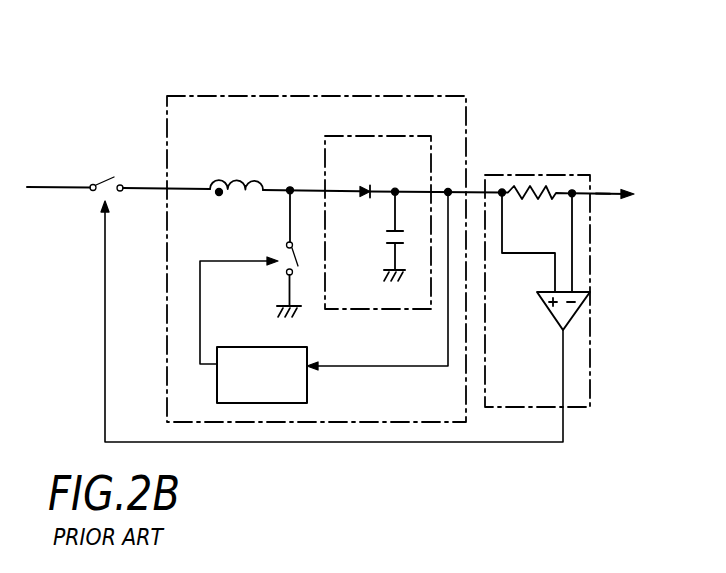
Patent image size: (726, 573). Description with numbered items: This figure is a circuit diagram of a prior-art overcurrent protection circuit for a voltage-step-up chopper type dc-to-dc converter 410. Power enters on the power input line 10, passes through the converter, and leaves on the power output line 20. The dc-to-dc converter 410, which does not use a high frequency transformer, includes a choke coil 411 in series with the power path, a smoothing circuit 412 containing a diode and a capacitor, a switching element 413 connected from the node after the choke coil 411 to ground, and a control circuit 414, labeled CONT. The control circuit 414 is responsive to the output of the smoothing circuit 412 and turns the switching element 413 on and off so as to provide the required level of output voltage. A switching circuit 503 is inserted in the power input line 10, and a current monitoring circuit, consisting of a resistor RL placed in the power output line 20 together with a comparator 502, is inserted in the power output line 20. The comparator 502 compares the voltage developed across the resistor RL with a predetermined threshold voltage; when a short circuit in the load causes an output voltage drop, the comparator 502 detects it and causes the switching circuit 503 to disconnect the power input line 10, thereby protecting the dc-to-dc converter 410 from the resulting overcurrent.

The power input line 10 is at (45, 187).
The power output line 20 is at (600, 193).
The switching circuit 503 is at (117, 175).
The dc-to-dc converter 410 is at (363, 96).
The choke coil 411 is at (220, 185).
The smoothing circuit 412 is at (325, 140).
The switching element 413 is at (282, 245).
The control circuit 414 is at (245, 347).
The comparator 502 is at (549, 313).